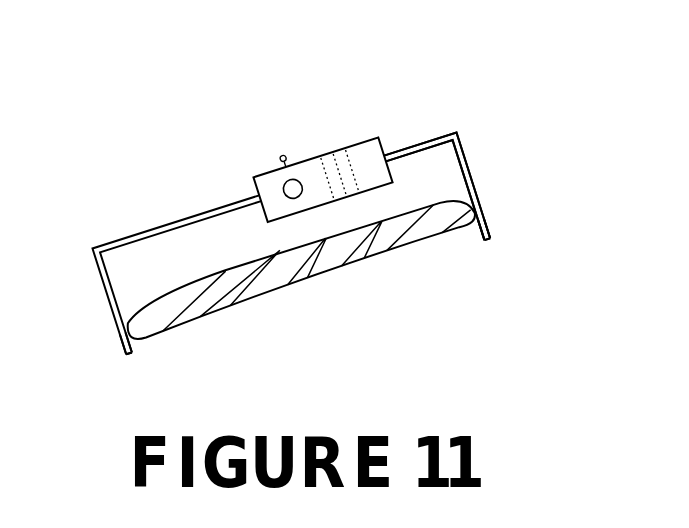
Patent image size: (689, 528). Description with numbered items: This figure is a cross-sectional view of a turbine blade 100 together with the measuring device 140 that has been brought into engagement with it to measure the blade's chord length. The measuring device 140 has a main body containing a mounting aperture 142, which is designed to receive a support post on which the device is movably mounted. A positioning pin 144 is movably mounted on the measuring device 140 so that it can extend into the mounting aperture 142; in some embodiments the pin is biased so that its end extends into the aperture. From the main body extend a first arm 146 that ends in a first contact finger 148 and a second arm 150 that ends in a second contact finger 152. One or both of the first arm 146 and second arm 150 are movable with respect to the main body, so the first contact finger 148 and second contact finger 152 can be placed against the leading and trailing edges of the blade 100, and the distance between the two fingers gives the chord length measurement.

The blade 100 is at (314, 258).
The measuring device 140 is at (338, 160).
The mounting aperture 142 is at (285, 184).
The positioning pin 144 is at (284, 154).
The first arm 146 is at (155, 224).
The first contact finger 148 is at (130, 355).
The second arm 150 is at (419, 142).
The second contact finger 152 is at (491, 243).